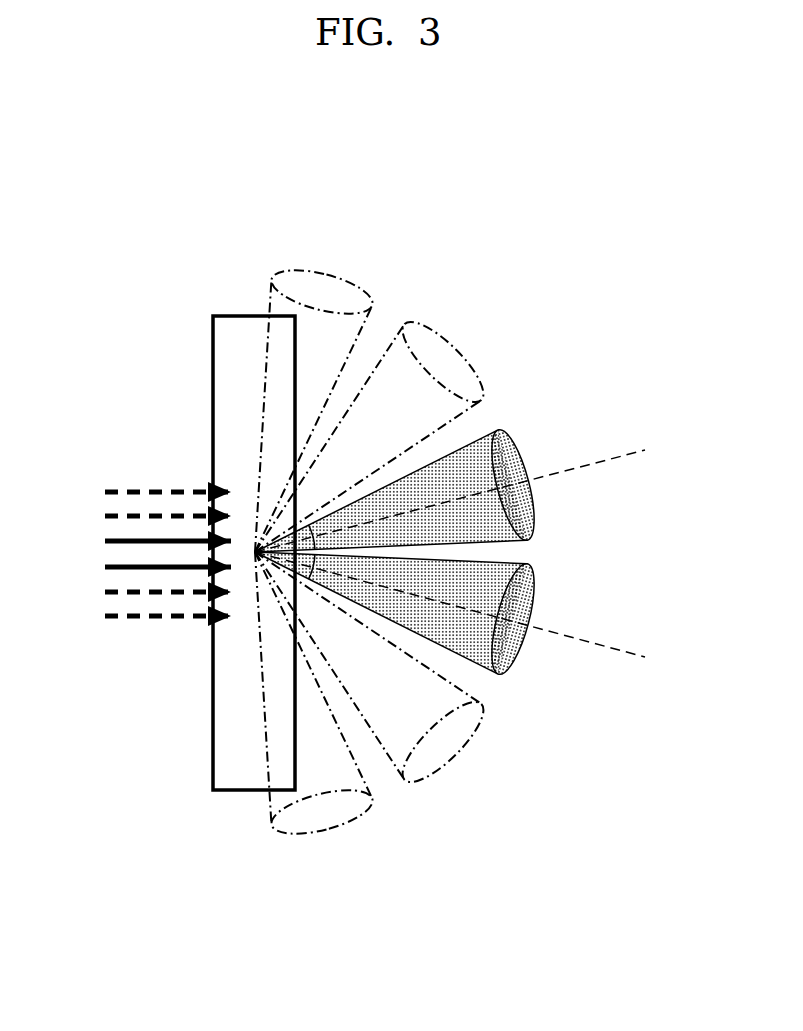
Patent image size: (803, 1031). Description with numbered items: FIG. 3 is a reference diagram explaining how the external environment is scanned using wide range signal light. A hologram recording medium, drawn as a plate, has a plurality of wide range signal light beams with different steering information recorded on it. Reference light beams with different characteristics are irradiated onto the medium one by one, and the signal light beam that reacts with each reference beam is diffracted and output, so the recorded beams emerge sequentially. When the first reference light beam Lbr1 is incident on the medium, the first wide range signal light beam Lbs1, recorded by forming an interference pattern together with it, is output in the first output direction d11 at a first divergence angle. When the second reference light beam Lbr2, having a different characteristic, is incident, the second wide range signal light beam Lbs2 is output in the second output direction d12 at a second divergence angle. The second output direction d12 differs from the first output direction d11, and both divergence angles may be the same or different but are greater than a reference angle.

The second reference light beam Lbr2 is at (142, 534).
The first reference light beam Lbr1 is at (142, 561).
The second wide range signal light beam Lbs2 is at (513, 432).
The first wide range signal light beam Lbs1 is at (508, 672).
The second output direction d12 is at (473, 493).
The first output direction d11 is at (473, 611).